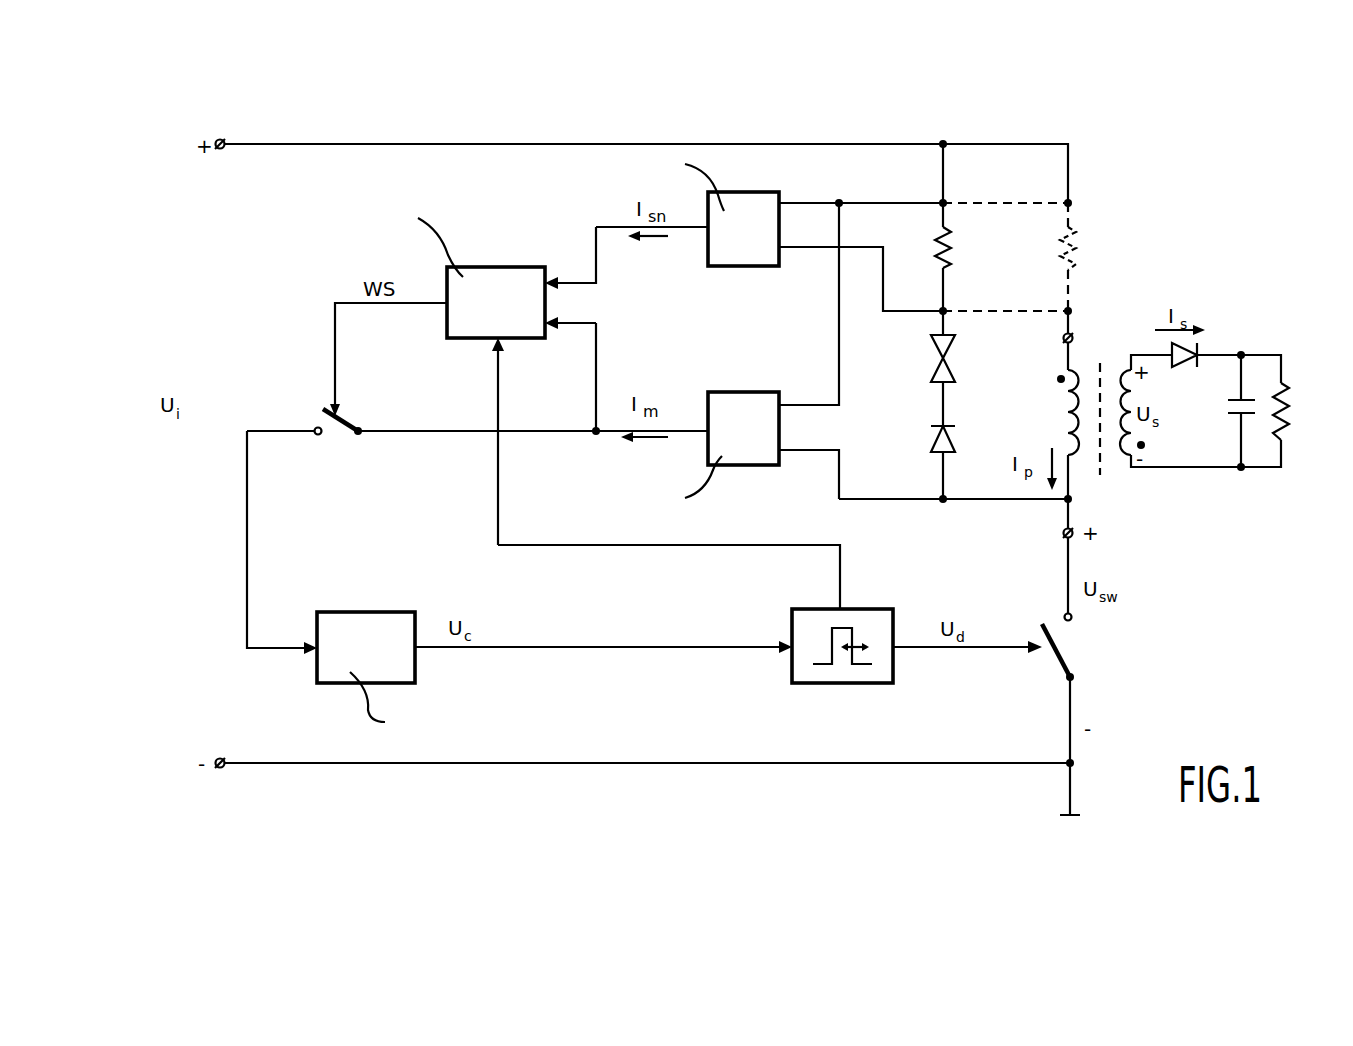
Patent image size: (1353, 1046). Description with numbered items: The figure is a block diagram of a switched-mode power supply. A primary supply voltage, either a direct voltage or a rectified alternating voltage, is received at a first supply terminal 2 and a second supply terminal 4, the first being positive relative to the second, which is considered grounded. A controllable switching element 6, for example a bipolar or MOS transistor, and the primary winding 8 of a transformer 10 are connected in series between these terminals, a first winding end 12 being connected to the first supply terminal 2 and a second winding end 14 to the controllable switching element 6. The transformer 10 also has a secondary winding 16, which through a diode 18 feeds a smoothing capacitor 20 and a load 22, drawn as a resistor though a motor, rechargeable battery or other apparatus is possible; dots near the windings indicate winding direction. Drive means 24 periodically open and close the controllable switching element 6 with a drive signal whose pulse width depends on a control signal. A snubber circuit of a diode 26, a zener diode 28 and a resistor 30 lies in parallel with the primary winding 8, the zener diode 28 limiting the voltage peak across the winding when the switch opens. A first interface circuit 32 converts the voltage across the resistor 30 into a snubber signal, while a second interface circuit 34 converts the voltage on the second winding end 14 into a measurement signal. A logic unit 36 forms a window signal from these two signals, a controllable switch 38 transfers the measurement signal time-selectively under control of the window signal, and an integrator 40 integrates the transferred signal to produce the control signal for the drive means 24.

The first supply terminal 2 is at (221, 139).
The second supply terminal 4 is at (221, 769).
The controllable switching element 6 is at (1062, 655).
The primary winding 8 is at (1067, 412).
The transformer 10 is at (1090, 418).
The first winding end 12 is at (1075, 335).
The second winding end 14 is at (1062, 533).
The secondary winding 16 is at (1104, 367).
The diode 18 is at (1200, 350).
The smoothing capacitor 20 is at (1236, 411).
The load 22 is at (1291, 415).
The drive means 24 is at (813, 608).
The diode 26 is at (954, 441).
The zener diode 28 is at (951, 346).
The resistor 30 is at (951, 252).
The first interface circuit 32 is at (728, 268).
The second interface circuit 34 is at (731, 391).
The logic unit 36 is at (492, 265).
The controllable switch 38 is at (350, 410).
The integrator 40 is at (366, 611).